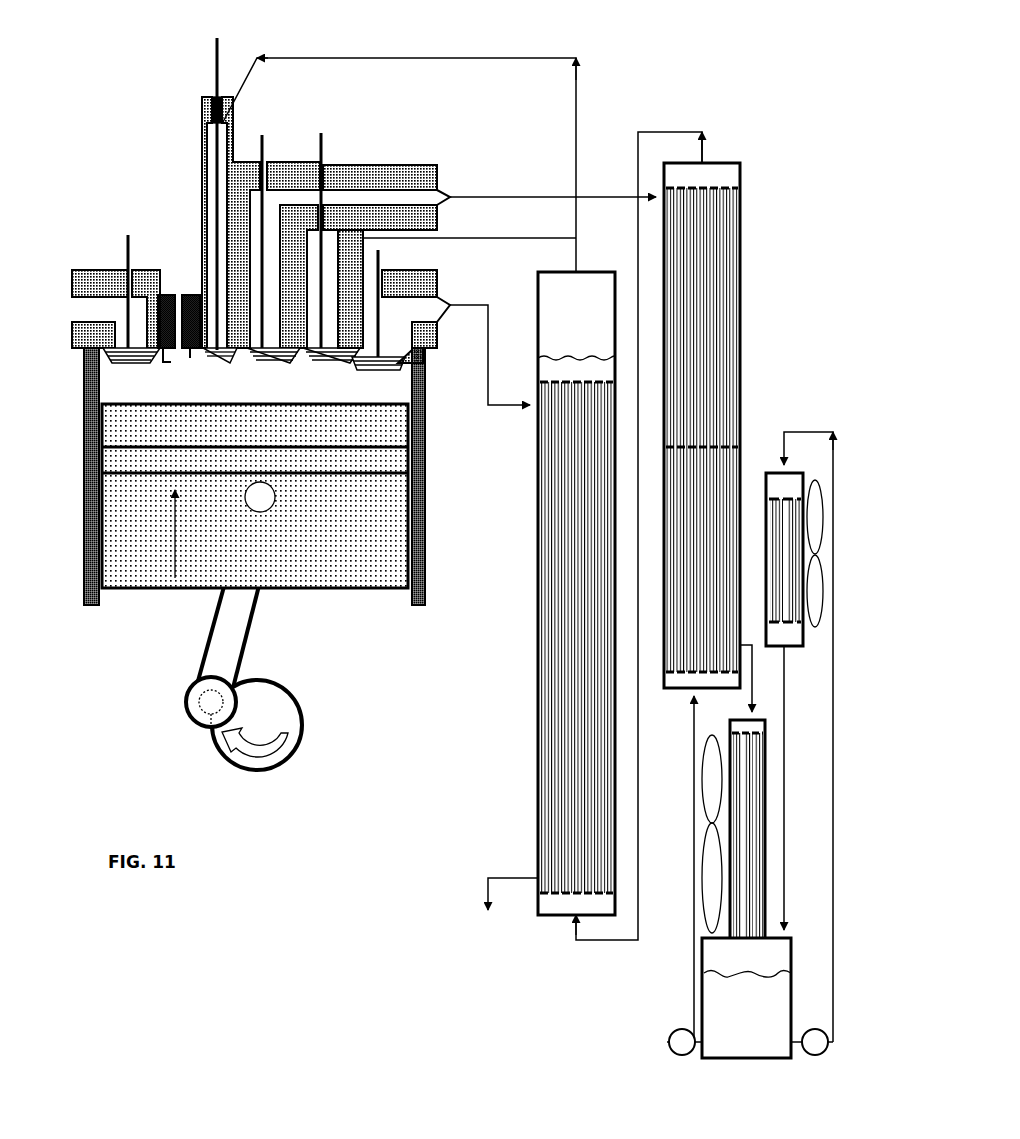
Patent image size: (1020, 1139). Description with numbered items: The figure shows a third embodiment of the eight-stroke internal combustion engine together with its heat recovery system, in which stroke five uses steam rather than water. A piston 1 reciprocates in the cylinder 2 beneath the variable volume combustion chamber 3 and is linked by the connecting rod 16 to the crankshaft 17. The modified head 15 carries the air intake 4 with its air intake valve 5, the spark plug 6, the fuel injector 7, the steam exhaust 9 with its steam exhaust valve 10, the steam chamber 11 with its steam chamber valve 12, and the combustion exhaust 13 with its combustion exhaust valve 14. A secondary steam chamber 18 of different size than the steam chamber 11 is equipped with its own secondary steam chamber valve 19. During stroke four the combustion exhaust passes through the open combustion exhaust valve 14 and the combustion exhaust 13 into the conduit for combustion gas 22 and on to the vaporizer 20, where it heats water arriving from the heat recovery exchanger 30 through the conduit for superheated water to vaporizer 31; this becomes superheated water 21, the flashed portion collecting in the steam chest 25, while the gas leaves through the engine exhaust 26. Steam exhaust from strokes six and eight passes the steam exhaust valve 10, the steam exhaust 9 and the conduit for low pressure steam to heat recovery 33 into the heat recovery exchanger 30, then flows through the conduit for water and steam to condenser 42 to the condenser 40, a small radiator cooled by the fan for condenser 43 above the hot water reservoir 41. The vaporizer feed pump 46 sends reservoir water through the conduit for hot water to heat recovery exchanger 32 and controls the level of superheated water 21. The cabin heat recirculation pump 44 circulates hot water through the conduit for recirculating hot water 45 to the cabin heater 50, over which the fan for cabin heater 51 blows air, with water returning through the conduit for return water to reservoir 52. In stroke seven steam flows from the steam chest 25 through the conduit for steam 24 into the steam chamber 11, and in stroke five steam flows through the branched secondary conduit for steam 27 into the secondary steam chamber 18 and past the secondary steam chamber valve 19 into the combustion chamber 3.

The piston 1 is at (135, 500).
The cylinder 2 is at (97, 393).
The combustion chamber 3 is at (145, 385).
The air intake 4 is at (100, 309).
The air intake valve 5 is at (125, 240).
The spark plug 6 is at (168, 293).
The fuel injector 7 is at (188, 293).
The steam exhaust 9 is at (272, 198).
The steam exhaust valve 10 is at (262, 147).
The steam chamber 11 is at (312, 250).
The steam chamber valve 12 is at (323, 153).
The combustion exhaust 13 is at (388, 302).
The combustion exhaust valve 14 is at (380, 257).
The head 15 is at (423, 328).
The connecting rod 16 is at (260, 612).
The crankshaft 17 is at (308, 727).
The secondary steam chamber 18 is at (213, 167).
The secondary steam chamber valve 19 is at (217, 80).
The vaporizer 20 is at (538, 590).
The superheated water 21 is at (592, 368).
The conduit for combustion gas 22 is at (490, 410).
The conduit for steam 24 is at (550, 238).
The steam chest 25 is at (600, 305).
The engine exhaust 26 is at (507, 865).
The secondary conduit for steam 27 is at (470, 57).
The heat recovery exchanger 30 is at (744, 250).
The conduit for superheated water to vaporizer 31 is at (690, 132).
The conduit for hot water to heat recovery exchanger 32 is at (694, 887).
The conduit for low pressure steam to heat recovery 33 is at (610, 193).
The condenser 40 is at (768, 760).
The hot water reservoir 41 is at (743, 1003).
The conduit for water and steam to condenser 42 is at (752, 680).
The fan for condenser 43 is at (712, 885).
The cabin heat recirculation pump 44 is at (826, 1031).
The conduit for recirculating hot water 45 is at (833, 890).
The vaporizer feed pump 46 is at (668, 1032).
The cabin heater 50 is at (803, 525).
The fan for cabin heater 51 is at (813, 603).
The conduit for return water to reservoir 52 is at (783, 688).